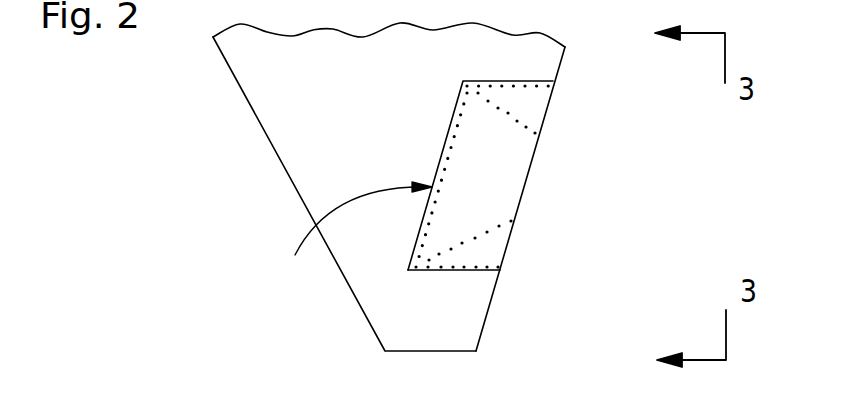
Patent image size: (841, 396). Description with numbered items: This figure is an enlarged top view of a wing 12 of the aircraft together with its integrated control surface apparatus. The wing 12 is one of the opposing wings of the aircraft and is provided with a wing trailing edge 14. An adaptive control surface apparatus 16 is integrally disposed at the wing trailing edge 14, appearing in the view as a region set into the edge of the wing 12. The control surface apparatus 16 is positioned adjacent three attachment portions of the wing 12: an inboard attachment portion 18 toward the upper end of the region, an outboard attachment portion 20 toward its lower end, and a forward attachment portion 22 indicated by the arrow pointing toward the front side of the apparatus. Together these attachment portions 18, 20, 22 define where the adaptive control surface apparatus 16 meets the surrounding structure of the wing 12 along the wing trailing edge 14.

The wing 12 is at (278, 117).
The wing trailing edge 14 is at (482, 335).
The adaptive control surface apparatus 16 is at (515, 170).
The inboard attachment portion 18 is at (530, 63).
The outboard attachment portion 20 is at (470, 277).
The forward attachment portion 22 is at (352, 236).